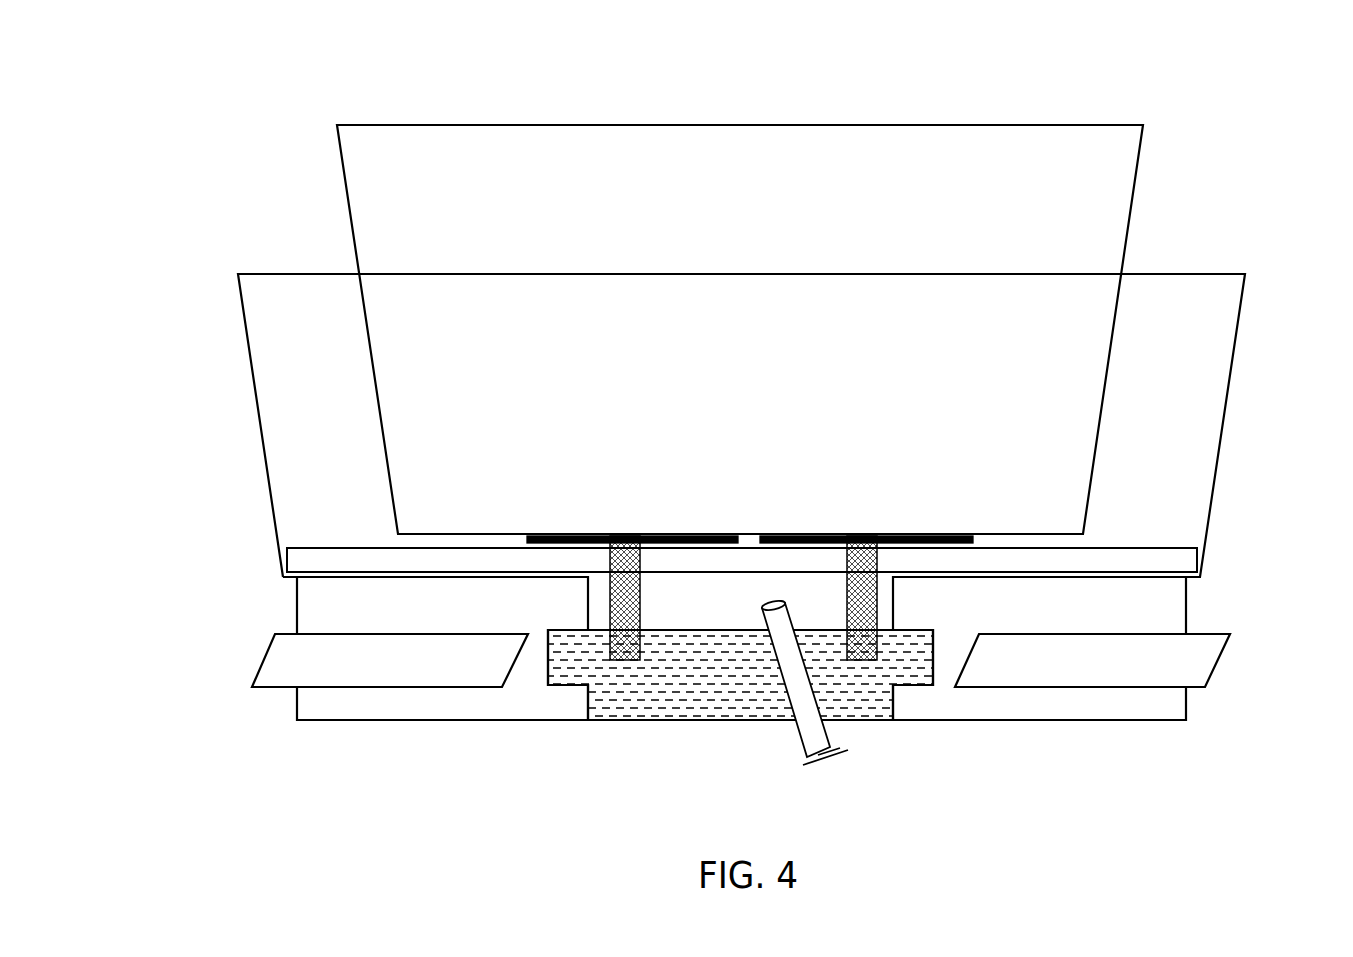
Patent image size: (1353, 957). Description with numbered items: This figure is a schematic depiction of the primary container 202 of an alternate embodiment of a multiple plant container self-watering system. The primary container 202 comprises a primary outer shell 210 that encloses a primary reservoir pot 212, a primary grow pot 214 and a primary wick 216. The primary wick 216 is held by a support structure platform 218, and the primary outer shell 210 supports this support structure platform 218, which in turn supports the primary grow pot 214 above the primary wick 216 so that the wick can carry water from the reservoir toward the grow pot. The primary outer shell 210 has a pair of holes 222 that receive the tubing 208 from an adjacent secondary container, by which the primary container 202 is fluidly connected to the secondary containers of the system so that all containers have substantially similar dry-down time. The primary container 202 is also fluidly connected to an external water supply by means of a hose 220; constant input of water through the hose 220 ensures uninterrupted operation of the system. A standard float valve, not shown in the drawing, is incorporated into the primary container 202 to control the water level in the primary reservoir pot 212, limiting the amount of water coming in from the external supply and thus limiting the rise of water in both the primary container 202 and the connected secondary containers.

The primary container 202 is at (730, 72).
The tubing 208 is at (295, 672).
The primary outer shell 210 is at (243, 322).
The primary reservoir pot 212 is at (588, 699).
The primary grow pot 214 is at (342, 158).
The primary wick 216 is at (838, 617).
The support structure platform 218 is at (1188, 553).
The hose 220 is at (827, 735).
The pair of holes 222 is at (296, 633).